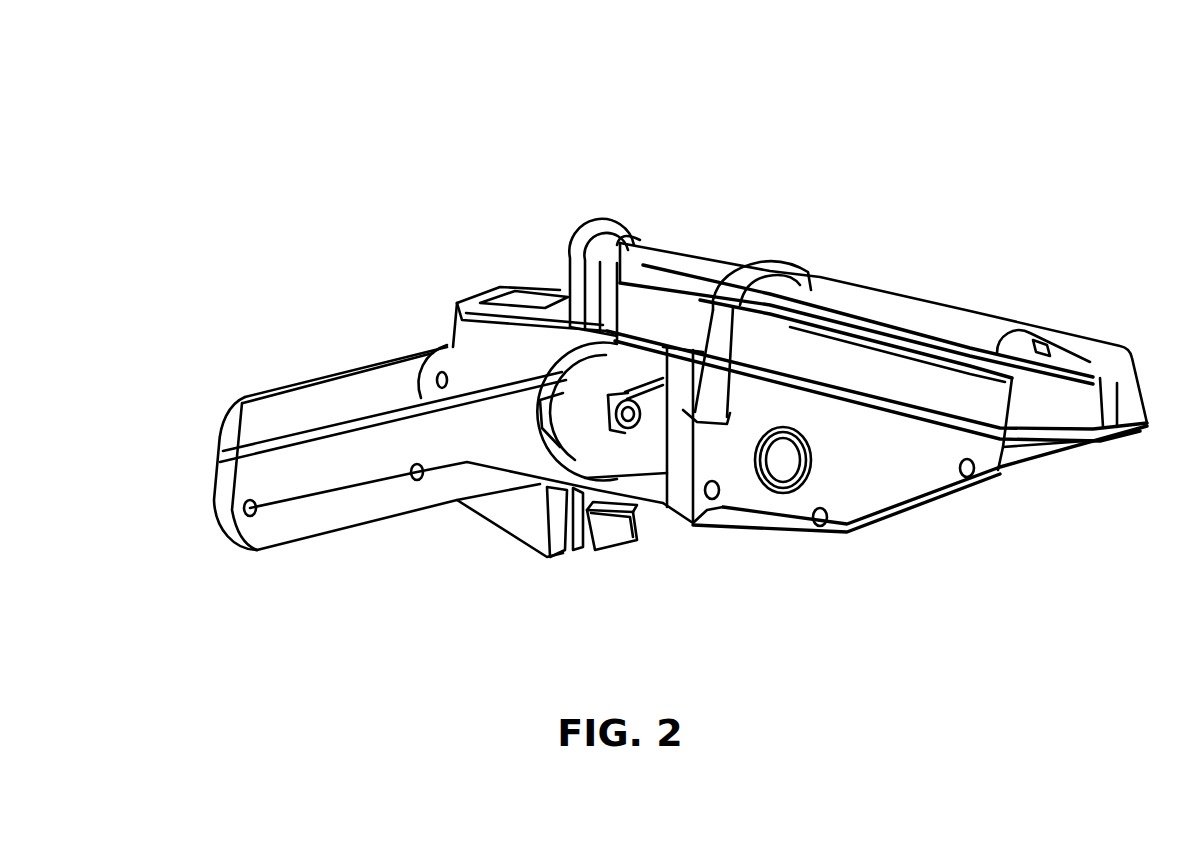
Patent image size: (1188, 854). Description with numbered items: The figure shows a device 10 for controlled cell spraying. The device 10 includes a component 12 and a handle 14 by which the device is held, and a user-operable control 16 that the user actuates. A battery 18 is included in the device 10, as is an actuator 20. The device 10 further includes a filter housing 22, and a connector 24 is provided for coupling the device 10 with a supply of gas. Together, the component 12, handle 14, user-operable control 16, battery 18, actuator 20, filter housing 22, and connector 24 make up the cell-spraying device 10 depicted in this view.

The device 10 is at (462, 190).
The component 12 is at (972, 393).
The handle 14 is at (310, 463).
The user-operable control 16 is at (610, 533).
The battery 18 is at (335, 503).
The actuator 20 is at (580, 242).
The filter housing 22 is at (617, 455).
The connector 24 is at (637, 390).